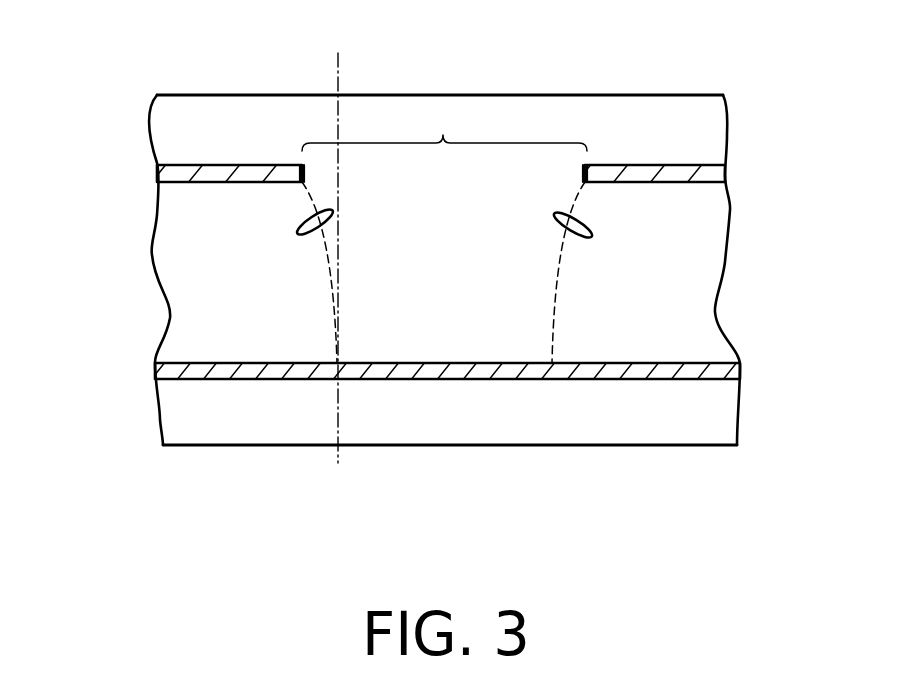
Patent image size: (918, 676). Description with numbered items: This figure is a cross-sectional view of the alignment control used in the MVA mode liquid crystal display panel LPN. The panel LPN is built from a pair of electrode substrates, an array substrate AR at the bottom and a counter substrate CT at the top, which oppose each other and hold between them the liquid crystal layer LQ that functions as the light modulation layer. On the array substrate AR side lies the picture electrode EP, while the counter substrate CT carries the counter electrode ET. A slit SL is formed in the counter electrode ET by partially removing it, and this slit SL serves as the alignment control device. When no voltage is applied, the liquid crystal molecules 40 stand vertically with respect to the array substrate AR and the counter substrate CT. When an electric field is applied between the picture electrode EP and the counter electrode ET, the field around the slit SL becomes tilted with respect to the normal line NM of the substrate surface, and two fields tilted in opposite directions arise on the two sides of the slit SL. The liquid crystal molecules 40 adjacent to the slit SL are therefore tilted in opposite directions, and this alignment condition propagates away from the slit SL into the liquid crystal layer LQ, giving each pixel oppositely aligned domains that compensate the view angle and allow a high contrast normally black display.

The liquid crystal display panel LPN is at (97, 84).
The counter substrate CT is at (745, 126).
The counter electrode ET is at (157, 178).
The slit SL is at (444, 126).
The normal line NM is at (339, 241).
The liquid crystal layer LQ is at (699, 262).
The liquid crystal molecule 40 is at (299, 234).
The picture electrode EP is at (740, 371).
The array substrate AR is at (755, 423).